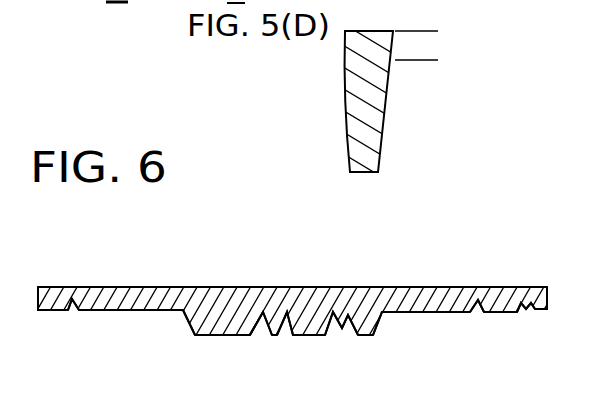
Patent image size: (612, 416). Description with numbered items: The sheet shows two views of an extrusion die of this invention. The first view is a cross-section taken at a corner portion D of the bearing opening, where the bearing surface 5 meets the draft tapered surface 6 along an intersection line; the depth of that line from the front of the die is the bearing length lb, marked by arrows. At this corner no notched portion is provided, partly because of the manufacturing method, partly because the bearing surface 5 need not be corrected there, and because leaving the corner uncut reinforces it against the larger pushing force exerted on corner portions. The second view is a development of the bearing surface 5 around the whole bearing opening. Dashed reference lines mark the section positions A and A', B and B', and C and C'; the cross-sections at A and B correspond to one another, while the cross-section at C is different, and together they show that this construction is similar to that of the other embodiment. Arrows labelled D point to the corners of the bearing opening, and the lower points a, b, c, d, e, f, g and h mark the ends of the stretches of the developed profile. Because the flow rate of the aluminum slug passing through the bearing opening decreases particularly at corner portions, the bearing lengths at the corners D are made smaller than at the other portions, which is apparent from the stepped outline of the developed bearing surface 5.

In FIG. 5D, the bearing surface 5 is at (396, 44).
In FIG. 6, the bearing surface 5 is at (220, 291).
In FIG. 5D, the draft tapered surface 6 is at (384, 120).
In FIG. 5D, the bearing length lb is at (427, 12).
In FIG. 6, the corner portion of the bearing opening D is at (303, 281).
In FIG. 6, the section line B-B' B is at (282, 257).
In FIG. 6, the section line C-C' C is at (275, 257).
In FIG. 6, the section line A-A' A is at (524, 251).
In FIG. 6, the point a is at (38, 313).
In FIG. 6, the point b is at (46, 313).
In FIG. 6, the point c is at (183, 313).
In FIG. 6, the point d is at (193, 338).
In FIG. 6, the point e is at (372, 338).
In FIG. 6, the point f is at (382, 315).
In FIG. 6, the point g is at (497, 315).
In FIG. 6, the point h is at (506, 315).